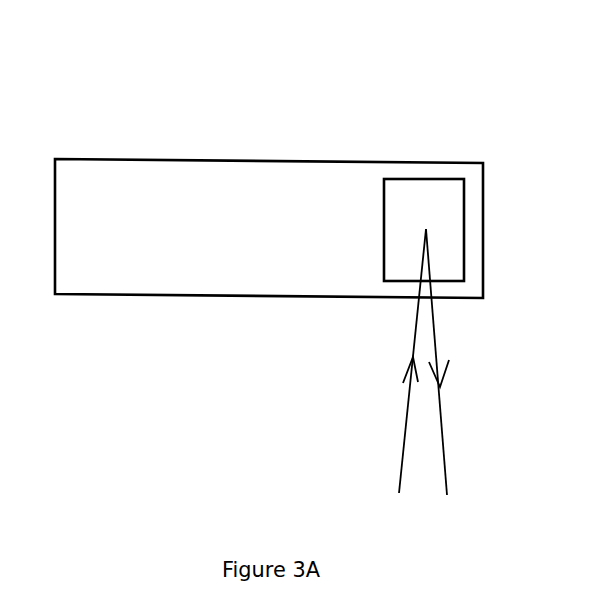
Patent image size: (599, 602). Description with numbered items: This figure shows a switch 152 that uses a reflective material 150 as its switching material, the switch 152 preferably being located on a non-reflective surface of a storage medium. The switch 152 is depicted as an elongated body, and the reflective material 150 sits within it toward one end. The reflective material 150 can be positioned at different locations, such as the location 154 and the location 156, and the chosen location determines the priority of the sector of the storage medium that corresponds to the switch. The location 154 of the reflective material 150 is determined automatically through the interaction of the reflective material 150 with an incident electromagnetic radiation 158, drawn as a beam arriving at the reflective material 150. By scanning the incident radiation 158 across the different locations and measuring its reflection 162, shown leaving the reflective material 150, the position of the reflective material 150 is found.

The reflective material 150 is at (416, 189).
The switch 152 is at (250, 158).
The location of the reflective material 154 is at (453, 293).
The location of the reflective material 156 is at (235, 279).
The incident electromagnetic radiation 158 is at (400, 381).
The reflection 162 is at (448, 381).